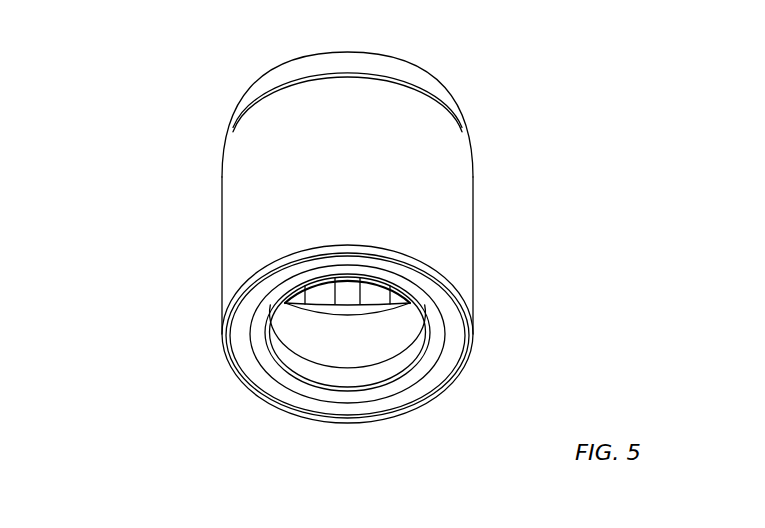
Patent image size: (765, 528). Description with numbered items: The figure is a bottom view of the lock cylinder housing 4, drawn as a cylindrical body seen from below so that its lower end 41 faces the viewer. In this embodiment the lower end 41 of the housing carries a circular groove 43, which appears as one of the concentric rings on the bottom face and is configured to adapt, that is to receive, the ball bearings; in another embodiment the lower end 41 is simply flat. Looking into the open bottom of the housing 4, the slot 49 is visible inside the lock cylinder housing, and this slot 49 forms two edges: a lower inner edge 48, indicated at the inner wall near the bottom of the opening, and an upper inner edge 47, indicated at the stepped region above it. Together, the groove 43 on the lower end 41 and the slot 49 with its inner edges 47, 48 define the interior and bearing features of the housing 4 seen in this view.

The lock cylinder housing 4 is at (362, 183).
The lower end of the housing 41 is at (241, 333).
The circular groove 43 is at (418, 385).
The upper inner edge 47 is at (371, 313).
The lower inner edge 48 is at (378, 365).
The slot 49 is at (350, 312).